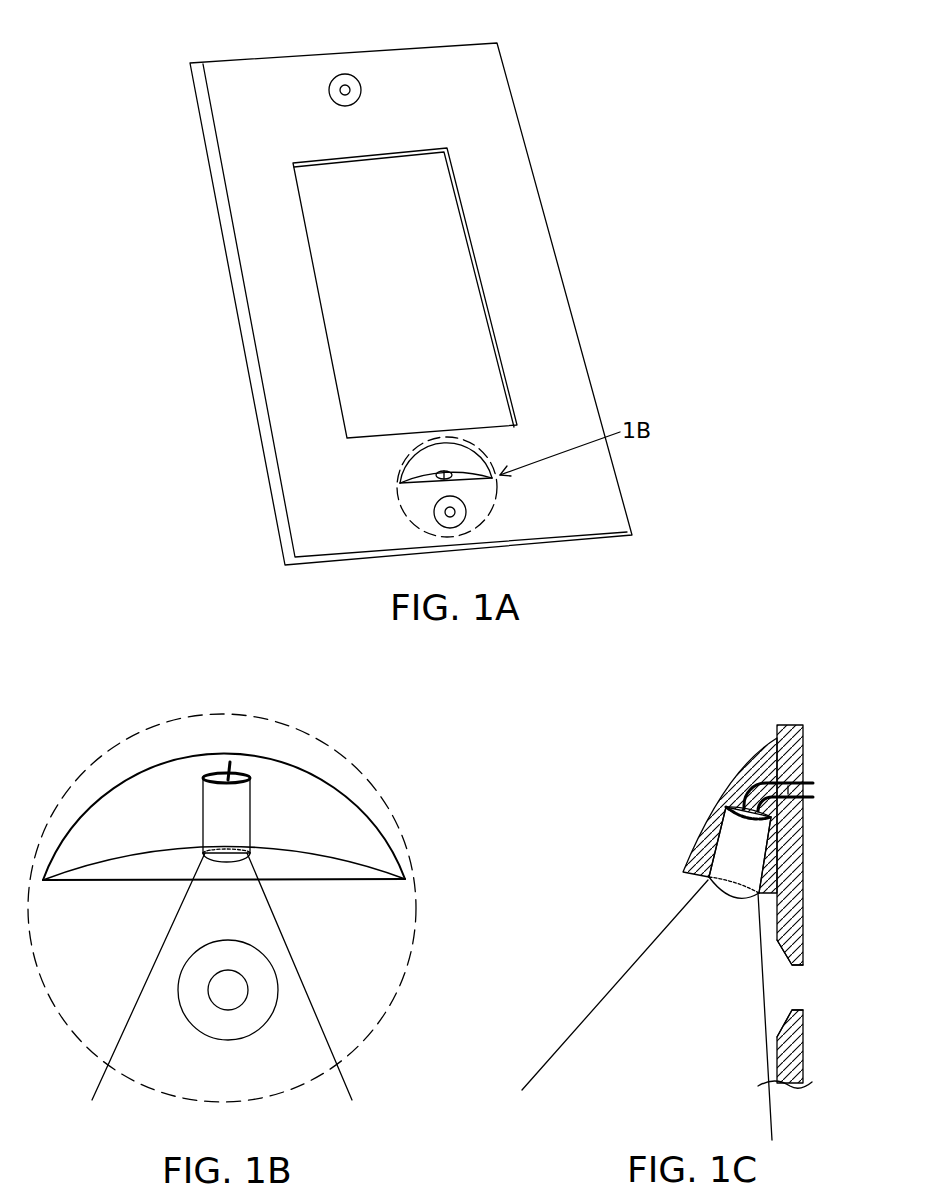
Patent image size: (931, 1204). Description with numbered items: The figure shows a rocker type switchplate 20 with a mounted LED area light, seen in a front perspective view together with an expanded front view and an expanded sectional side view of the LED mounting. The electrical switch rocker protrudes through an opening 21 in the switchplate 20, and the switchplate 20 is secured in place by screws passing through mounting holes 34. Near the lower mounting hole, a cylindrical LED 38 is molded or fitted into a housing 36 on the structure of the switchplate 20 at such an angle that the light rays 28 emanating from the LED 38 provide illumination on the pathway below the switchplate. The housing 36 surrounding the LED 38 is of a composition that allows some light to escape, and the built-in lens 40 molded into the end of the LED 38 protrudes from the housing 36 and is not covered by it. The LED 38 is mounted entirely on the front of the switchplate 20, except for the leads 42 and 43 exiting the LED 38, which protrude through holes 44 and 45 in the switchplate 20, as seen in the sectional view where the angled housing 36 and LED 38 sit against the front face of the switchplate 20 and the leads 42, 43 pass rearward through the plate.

In FIG. 1A, the switchplate 20 is at (555, 338).
In FIG. 1C, the switchplate 20 is at (787, 747).
In FIG. 1A, the opening 21 is at (455, 287).
In FIG. 1B, the light rays 28 is at (133, 1042).
In FIG. 1C, the light rays 28 is at (660, 963).
In FIG. 1A, the mounting holes 34 is at (345, 90).
In FIG. 1B, the mounting holes 34 is at (228, 990).
In FIG. 1C, the mounting holes 34 is at (793, 988).
In FIG. 1A, the housing 36 is at (418, 467).
In FIG. 1B, the housing 36 is at (317, 803).
In FIG. 1C, the housing 36 is at (767, 757).
In FIG. 1B, the LED 38 is at (217, 808).
In FIG. 1C, the LED 38 is at (740, 837).
In FIG. 1B, the built-in lens 40 is at (215, 860).
In FIG. 1C, the built-in lens 40 is at (727, 892).
In FIG. 1C, the lead 42 is at (815, 783).
In FIG. 1C, the lead 43 is at (815, 797).
In FIG. 1C, the hole 44 is at (790, 790).
In FIG. 1C, the hole 45 is at (803, 800).